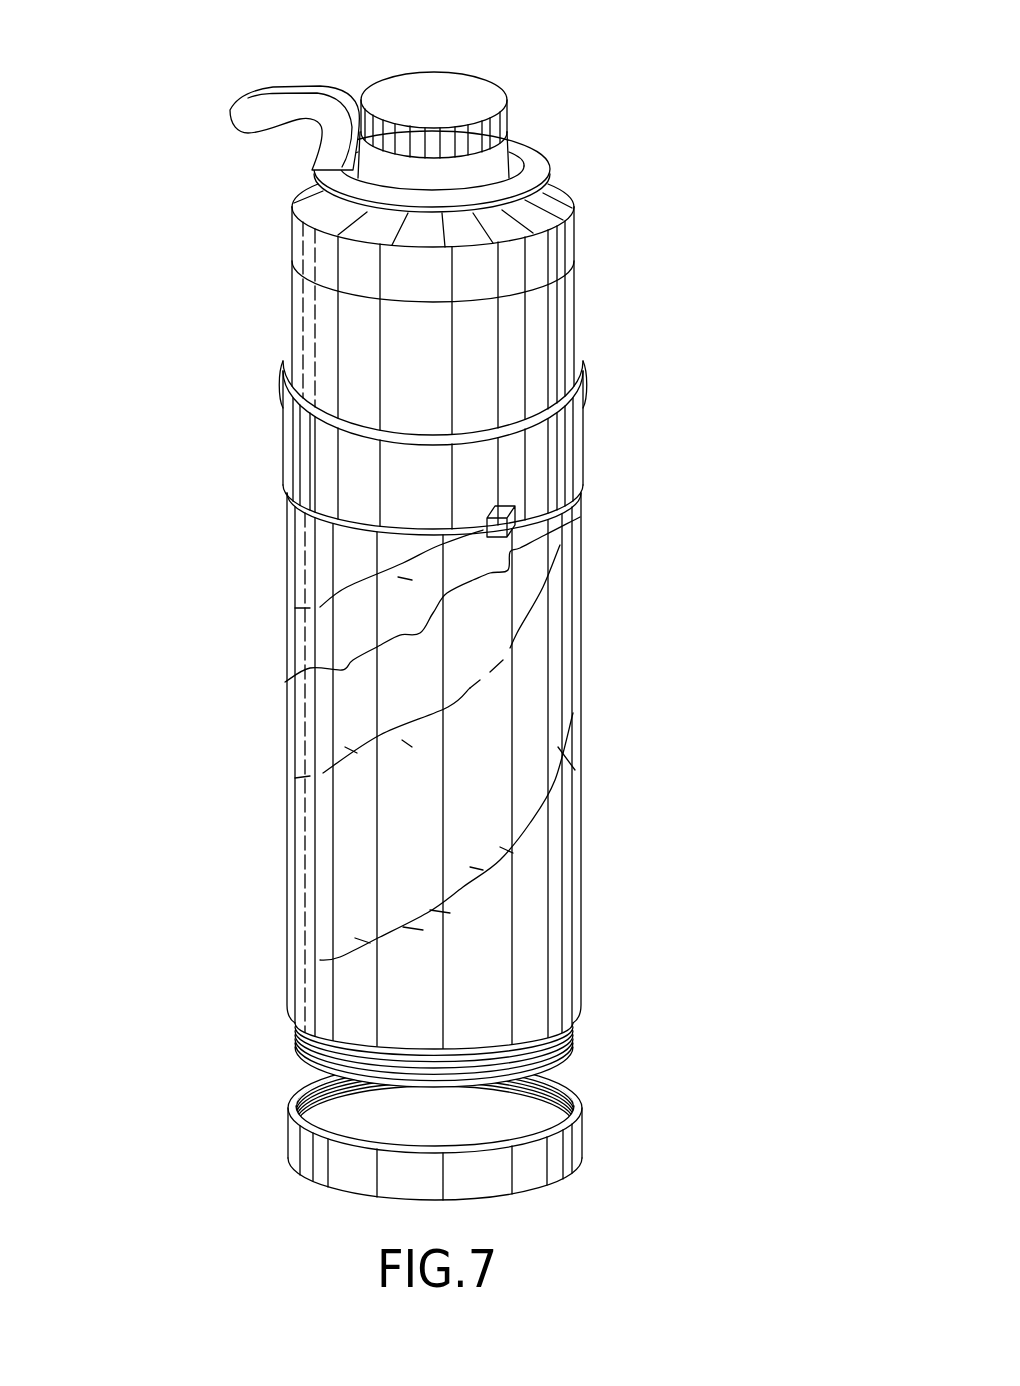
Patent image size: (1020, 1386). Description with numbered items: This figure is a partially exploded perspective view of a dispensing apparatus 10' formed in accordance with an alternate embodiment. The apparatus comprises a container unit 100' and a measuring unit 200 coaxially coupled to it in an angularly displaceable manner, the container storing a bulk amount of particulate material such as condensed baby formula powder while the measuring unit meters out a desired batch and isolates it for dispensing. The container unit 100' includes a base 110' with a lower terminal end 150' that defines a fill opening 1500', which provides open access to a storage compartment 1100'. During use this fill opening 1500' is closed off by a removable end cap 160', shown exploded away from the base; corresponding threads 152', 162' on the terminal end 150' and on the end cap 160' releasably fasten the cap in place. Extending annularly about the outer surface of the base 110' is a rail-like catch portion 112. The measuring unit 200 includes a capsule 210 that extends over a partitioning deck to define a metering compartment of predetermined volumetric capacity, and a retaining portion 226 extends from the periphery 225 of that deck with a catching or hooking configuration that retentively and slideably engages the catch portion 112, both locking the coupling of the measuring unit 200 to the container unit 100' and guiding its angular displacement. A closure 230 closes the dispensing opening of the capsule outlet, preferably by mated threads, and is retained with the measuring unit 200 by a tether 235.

The dispensing apparatus 10' is at (427, 637).
The container unit 100' is at (443, 884).
The base 110' is at (491, 771).
The catch portion 112 is at (578, 494).
The lower terminal end 150' is at (427, 1034).
The threads 152' is at (345, 1045).
The fill opening 1500' is at (516, 1068).
The end cap 160' is at (464, 1169).
The threads 162' is at (371, 1123).
The storage compartment 1100' is at (528, 1151).
The measuring unit 200 is at (605, 282).
The capsule 210 is at (553, 325).
The periphery 225 is at (567, 452).
The retaining portion 226 is at (502, 522).
The closure 230 is at (452, 97).
The tether 235 is at (246, 111).